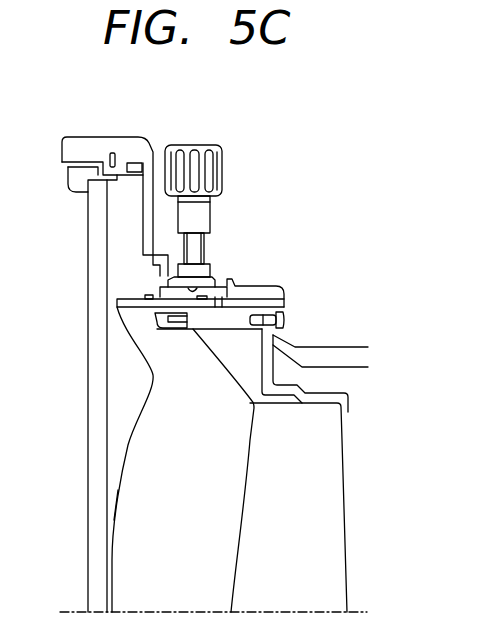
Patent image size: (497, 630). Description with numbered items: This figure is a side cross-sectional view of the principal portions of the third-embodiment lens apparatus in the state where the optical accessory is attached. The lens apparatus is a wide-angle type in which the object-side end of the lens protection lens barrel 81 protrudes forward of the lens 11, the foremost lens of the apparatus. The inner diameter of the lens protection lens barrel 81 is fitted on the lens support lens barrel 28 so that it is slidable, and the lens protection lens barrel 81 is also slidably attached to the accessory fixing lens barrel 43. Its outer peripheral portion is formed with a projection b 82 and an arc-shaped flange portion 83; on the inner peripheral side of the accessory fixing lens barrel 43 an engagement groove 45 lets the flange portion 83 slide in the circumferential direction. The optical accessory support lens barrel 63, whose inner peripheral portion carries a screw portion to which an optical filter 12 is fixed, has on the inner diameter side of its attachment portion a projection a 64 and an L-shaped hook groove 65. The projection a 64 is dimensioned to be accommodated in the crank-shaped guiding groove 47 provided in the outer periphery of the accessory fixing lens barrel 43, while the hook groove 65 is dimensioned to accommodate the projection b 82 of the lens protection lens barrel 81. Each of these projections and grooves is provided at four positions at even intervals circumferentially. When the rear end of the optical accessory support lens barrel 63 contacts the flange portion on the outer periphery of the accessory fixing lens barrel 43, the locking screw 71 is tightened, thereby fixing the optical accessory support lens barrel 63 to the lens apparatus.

The lens 11 is at (120, 558).
The optical filter 12 is at (97, 233).
The lens support lens barrel 28 is at (275, 337).
The accessory fixing lens barrel 43 is at (285, 296).
The engagement groove 45 is at (197, 329).
The guiding groove 47 is at (225, 288).
The optical accessory support lens barrel 63 is at (140, 148).
The projection a 64 is at (210, 290).
The hook groove 65 is at (163, 273).
The locking screw 71 is at (200, 145).
The lens protection lens barrel 81 is at (147, 350).
The projection b 82 is at (148, 306).
The flange portion 83 is at (220, 298).